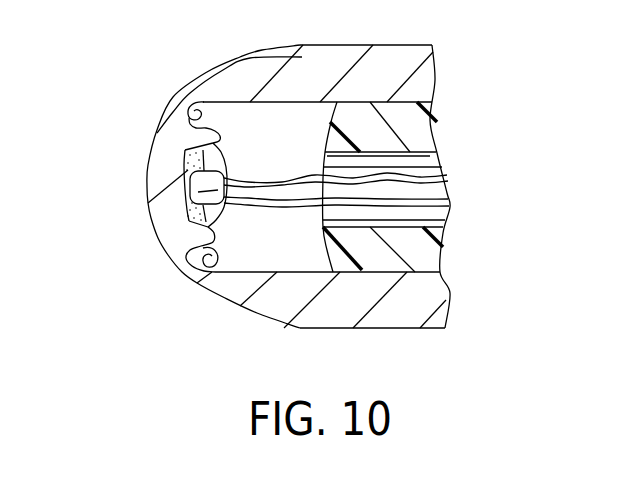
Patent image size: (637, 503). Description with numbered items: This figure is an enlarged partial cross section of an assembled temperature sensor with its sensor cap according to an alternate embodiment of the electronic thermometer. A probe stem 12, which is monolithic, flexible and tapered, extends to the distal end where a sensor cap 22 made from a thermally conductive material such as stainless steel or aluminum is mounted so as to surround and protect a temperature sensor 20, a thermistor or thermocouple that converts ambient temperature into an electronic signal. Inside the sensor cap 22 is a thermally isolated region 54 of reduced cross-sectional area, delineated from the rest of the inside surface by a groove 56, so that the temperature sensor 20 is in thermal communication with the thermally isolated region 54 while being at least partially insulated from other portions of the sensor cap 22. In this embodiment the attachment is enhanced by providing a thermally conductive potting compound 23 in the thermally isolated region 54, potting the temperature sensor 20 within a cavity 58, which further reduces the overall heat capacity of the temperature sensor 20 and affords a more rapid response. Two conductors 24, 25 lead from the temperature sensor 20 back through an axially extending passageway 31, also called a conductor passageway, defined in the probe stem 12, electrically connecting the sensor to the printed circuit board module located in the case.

The probe stem 12 is at (423, 132).
The temperature sensor 20 is at (188, 170).
The sensor cap 22 is at (393, 313).
The thermally conductive potting compound 23 is at (187, 155).
The conductor 24 is at (277, 206).
The conductor 25 is at (297, 177).
The axially extending passageway 31 is at (437, 223).
The thermally isolated region 54 is at (168, 225).
The groove 56 is at (203, 102).
The cavity 58 is at (199, 221).